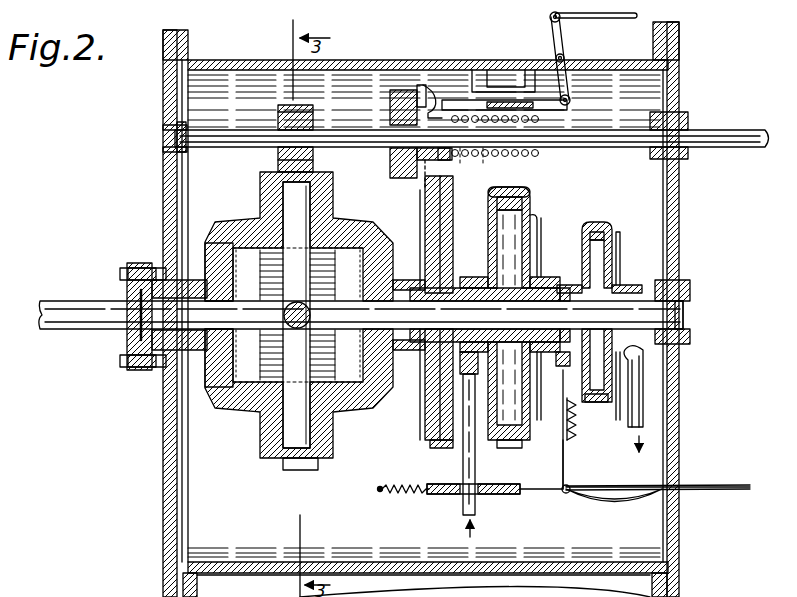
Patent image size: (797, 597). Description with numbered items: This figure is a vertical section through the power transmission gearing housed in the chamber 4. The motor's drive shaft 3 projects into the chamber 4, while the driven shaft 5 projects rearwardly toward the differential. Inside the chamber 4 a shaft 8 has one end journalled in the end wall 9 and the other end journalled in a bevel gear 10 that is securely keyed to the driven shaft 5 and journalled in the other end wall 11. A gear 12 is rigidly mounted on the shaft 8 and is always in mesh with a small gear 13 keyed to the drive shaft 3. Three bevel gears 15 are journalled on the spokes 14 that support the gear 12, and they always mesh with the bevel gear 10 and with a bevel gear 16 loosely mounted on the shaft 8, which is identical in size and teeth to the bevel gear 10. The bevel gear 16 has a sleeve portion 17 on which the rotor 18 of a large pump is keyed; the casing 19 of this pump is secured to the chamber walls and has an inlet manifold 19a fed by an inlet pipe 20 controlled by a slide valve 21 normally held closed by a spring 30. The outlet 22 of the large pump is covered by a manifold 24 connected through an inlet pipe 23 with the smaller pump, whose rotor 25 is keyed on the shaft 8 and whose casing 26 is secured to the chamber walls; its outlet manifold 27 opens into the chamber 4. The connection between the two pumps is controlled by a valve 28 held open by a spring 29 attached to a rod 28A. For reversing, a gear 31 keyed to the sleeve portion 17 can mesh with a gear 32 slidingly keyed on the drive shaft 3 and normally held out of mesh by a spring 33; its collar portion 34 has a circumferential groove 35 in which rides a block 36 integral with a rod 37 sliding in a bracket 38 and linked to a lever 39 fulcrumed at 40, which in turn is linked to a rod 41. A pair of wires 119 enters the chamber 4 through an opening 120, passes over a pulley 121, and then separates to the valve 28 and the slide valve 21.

The drive shaft 3 is at (204, 147).
The chamber 4 is at (565, 567).
The driven shaft 5 is at (76, 301).
The shaft 8 is at (690, 299).
The end wall 9 is at (681, 201).
The bevel gear 10 is at (206, 241).
The end wall 11 is at (163, 206).
The gear 12 is at (322, 173).
The small gear 13 is at (318, 118).
The spokes 14 is at (312, 270).
The bevel gears 15 is at (341, 226).
The bevel gear 16 is at (390, 365).
The sleeve portion 17 is at (455, 288).
The rotor 18 is at (490, 211).
The casing 19 is at (528, 200).
The inlet manifold 19a is at (486, 380).
The inlet pipe 20 is at (475, 450).
The slide valve 21 is at (480, 487).
The outlet 22 is at (542, 237).
The inlet pipe 23 is at (578, 342).
The manifold 24 is at (624, 400).
The rotor 25 is at (618, 236).
The casing 26 is at (597, 224).
The outlet manifold 27 is at (620, 250).
The valve 28 is at (563, 405).
The rod 28A is at (563, 438).
The spring 29 is at (575, 423).
The spring 30 is at (398, 488).
The gear 31 is at (421, 211).
The gear 32 is at (388, 92).
The spring 33 is at (495, 147).
The collar portion 34 is at (422, 85).
The circumferential groove 35 is at (444, 160).
The block 36 is at (438, 105).
The rod 37 is at (472, 72).
The bracket 38 is at (528, 70).
The lever 39 is at (563, 36).
The fulcrum 40 is at (568, 57).
The rod 41 is at (617, 19).
The wires 119 is at (702, 494).
The opening 120 is at (680, 486).
The pulley 121 is at (570, 486).